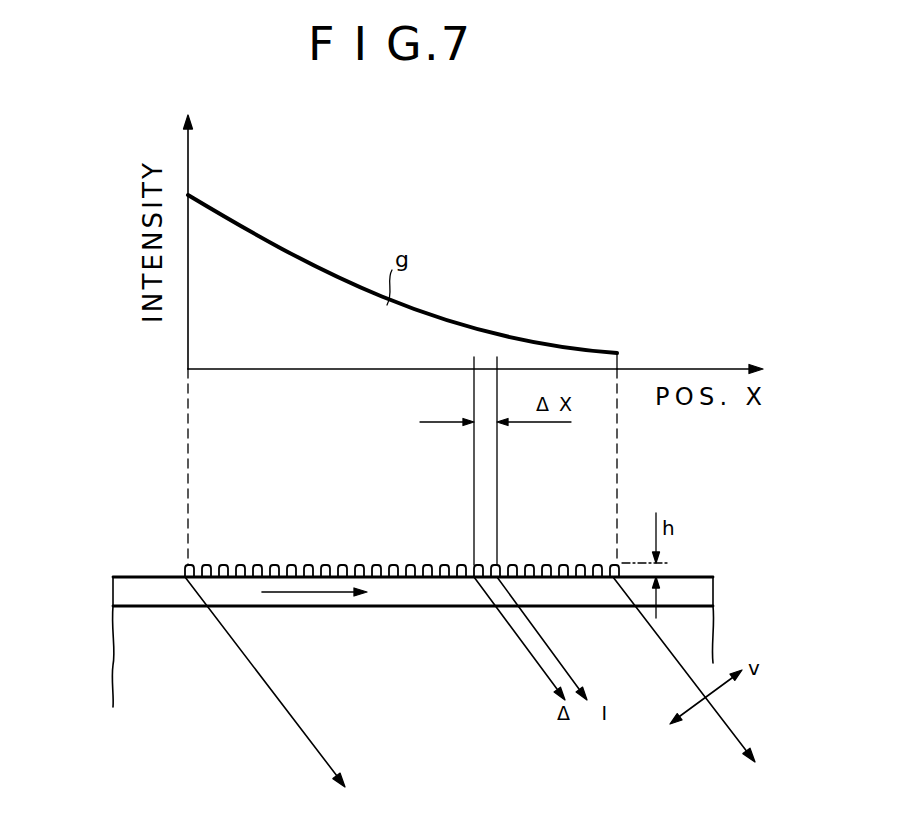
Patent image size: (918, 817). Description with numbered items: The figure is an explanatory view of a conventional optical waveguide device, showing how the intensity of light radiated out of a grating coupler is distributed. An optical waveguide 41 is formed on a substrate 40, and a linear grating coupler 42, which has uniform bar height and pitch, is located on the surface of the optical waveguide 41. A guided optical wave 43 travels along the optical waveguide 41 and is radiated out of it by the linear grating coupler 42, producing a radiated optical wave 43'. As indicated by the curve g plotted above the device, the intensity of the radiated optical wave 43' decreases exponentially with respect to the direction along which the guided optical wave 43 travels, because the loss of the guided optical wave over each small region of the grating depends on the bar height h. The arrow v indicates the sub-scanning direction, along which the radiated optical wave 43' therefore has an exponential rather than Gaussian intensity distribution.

The substrate 40 is at (138, 640).
The optical waveguide 41 is at (155, 577).
The linear grating coupler 42 is at (390, 565).
The guided optical wave 43 is at (314, 555).
The radiated optical wave 43' is at (265, 682).